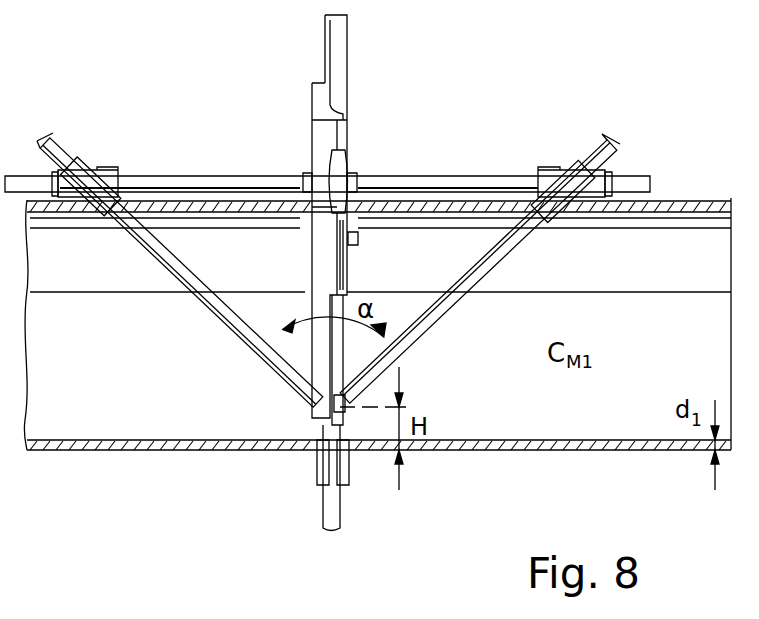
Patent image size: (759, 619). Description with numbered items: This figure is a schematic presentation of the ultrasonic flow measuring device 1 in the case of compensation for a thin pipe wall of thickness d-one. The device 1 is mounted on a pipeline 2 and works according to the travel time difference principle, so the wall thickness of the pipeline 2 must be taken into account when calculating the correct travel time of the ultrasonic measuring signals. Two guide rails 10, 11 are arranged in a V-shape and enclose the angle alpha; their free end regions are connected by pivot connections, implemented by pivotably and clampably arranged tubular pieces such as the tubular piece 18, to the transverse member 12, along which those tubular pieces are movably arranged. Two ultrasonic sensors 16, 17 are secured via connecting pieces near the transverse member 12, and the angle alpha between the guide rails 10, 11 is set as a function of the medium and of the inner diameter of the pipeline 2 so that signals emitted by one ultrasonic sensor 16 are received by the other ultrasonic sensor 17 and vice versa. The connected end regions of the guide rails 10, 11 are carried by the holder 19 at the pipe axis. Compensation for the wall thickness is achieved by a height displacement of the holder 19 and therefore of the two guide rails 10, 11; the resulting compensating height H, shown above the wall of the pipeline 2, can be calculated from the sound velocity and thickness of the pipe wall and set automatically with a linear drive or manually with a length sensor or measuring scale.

The ultrasonic flow measuring device 1 is at (626, 95).
The pipeline 2 is at (157, 452).
The guide rail 10 is at (512, 245).
The guide rail 11 is at (195, 285).
The transverse member 12 is at (459, 175).
The ultrasonic sensor 16 is at (108, 168).
The ultrasonic sensor 17 is at (553, 166).
The tubular piece 18 is at (333, 508).
The holder 19 is at (317, 470).